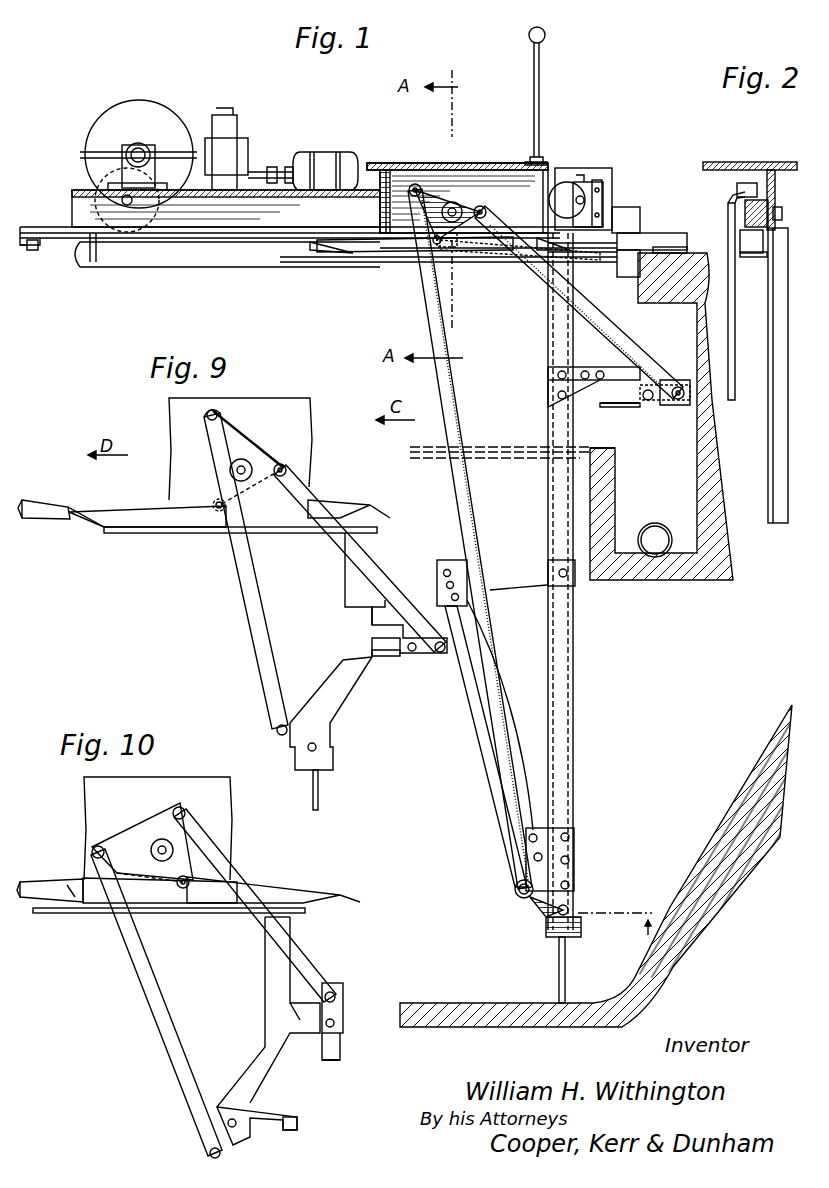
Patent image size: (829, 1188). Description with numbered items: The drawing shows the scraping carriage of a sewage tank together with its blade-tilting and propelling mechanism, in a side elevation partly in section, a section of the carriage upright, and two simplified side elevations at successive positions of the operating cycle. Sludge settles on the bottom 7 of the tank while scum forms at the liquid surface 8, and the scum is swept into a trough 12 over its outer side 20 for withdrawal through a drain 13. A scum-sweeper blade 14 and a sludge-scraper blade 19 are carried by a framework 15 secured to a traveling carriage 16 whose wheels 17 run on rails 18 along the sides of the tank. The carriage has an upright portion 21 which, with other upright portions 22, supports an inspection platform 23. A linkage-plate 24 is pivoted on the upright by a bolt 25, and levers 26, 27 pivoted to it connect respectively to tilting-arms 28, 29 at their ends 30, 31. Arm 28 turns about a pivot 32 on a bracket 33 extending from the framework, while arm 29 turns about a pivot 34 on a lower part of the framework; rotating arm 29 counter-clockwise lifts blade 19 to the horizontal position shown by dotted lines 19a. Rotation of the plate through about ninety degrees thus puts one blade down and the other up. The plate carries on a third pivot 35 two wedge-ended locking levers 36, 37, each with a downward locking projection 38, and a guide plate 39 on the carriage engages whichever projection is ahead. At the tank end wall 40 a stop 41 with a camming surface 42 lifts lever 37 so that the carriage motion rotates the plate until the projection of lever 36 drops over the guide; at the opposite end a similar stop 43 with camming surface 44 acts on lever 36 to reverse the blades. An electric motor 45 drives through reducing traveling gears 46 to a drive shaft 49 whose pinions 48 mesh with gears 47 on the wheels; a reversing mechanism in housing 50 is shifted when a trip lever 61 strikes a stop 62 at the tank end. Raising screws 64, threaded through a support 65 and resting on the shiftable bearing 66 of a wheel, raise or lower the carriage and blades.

In FIG. 1, the bottom 7 is at (455, 1003).
In FIG. 1, the surface 8 is at (475, 446).
In FIG. 1, the trough 12 is at (641, 487).
In FIG. 1, the drain 13 is at (658, 523).
In FIG. 1, the blade 14 is at (640, 408).
In FIG. 9, the blade 14 is at (378, 658).
In FIG. 10, the blade 14 is at (342, 1053).
In FIG. 1, the framework 15 is at (548, 350).
In FIG. 2, the framework 15 is at (770, 367).
In FIG. 9, the framework 15 is at (336, 705).
In FIG. 10, the framework 15 is at (268, 1068).
In FIG. 1, the carriage 16 is at (226, 208).
In FIG. 1, the wheels 17 is at (595, 175).
In FIG. 1, the rails 18 is at (30, 252).
In FIG. 1, the blade 19 is at (565, 975).
In FIG. 9, the blade 19 is at (319, 793).
In FIG. 10, the blade 19 is at (298, 1123).
In FIG. 1, the dotted lines 19a is at (620, 910).
In FIG. 1, the outer side 20 is at (600, 448).
In FIG. 1, the upright portion 21 is at (410, 178).
In FIG. 2, the upright portion 21 is at (772, 165).
In FIG. 1, the upright portions 22 is at (395, 178).
In FIG. 1, the inspection platform 23 is at (432, 166).
In FIG. 2, the inspection platform 23 is at (715, 160).
In FIG. 1, the linkage-plate 24 is at (440, 195).
In FIG. 2, the linkage-plate 24 is at (740, 183).
In FIG. 9, the linkage-plate 24 is at (228, 428).
In FIG. 10, the linkage-plate 24 is at (140, 822).
In FIG. 1, the bolt 25 is at (462, 212).
In FIG. 9, the bolt 25 is at (254, 468).
In FIG. 10, the bolt 25 is at (175, 848).
In FIG. 1, the lever 26 is at (530, 280).
In FIG. 9, the lever 26 is at (330, 545).
In FIG. 10, the lever 26 is at (300, 950).
In FIG. 1, the lever 27 is at (432, 290).
In FIG. 2, the lever 27 is at (742, 325).
In FIG. 9, the lever 27 is at (240, 605).
In FIG. 10, the lever 27 is at (165, 1060).
In FIG. 1, the tilting-arm 28 is at (680, 400).
In FIG. 1, the tilting-arm 29 is at (546, 925).
In FIG. 1, the end 30 is at (685, 400).
In FIG. 9, the end 30 is at (440, 654).
In FIG. 10, the end 30 is at (337, 997).
In FIG. 1, the end 31 is at (515, 890).
In FIG. 9, the end 31 is at (276, 732).
In FIG. 10, the end 31 is at (208, 1153).
In FIG. 1, the pivot 32 is at (648, 390).
In FIG. 9, the pivot 32 is at (412, 652).
In FIG. 10, the pivot 32 is at (336, 1023).
In FIG. 1, the bracket 33 is at (600, 367).
In FIG. 9, the bracket 33 is at (378, 610).
In FIG. 10, the bracket 33 is at (320, 990).
In FIG. 1, the pivot 34 is at (570, 905).
In FIG. 9, the pivot 34 is at (317, 747).
In FIG. 10, the pivot 34 is at (240, 1118).
In FIG. 1, the third pivot 35 is at (440, 247).
In FIG. 9, the third pivot 35 is at (215, 512).
In FIG. 10, the third pivot 35 is at (190, 892).
In FIG. 1, the locking lever 36 is at (345, 252).
In FIG. 9, the locking lever 36 is at (120, 512).
In FIG. 10, the locking lever 36 is at (150, 900).
In FIG. 1, the locking lever 37 is at (490, 270).
In FIG. 9, the locking lever 37 is at (345, 502).
In FIG. 10, the locking lever 37 is at (280, 888).
In FIG. 1, the locking projection 38 is at (330, 250).
In FIG. 9, the locking projection 38 is at (80, 530).
In FIG. 10, the locking projection 38 is at (70, 900).
In FIG. 1, the guide plate 39 is at (380, 262).
In FIG. 2, the guide plate 39 is at (745, 258).
In FIG. 9, the guide plate 39 is at (145, 535).
In FIG. 10, the guide plate 39 is at (95, 915).
In FIG. 1, the end wall 40 is at (690, 274).
In FIG. 1, the stop 41 is at (620, 262).
In FIG. 1, the camming surface 42 is at (625, 225).
In FIG. 9, the stop 43 is at (18, 498).
In FIG. 10, the stop 43 is at (25, 880).
In FIG. 9, the camming surface 44 is at (55, 505).
In FIG. 10, the camming surface 44 is at (40, 882).
In FIG. 1, the electric motor 45 is at (318, 152).
In FIG. 1, the reducing traveling gears 46 is at (222, 115).
In FIG. 1, the gears 47 is at (110, 165).
In FIG. 1, the pinions 48 is at (128, 143).
In FIG. 1, the drive shaft 49 is at (140, 148).
In FIG. 1, the housing 50 is at (122, 118).
In FIG. 1, the trip lever 61 is at (100, 262).
In FIG. 1, the stop 62 is at (150, 267).
In FIG. 1, the raising screws 64 is at (577, 185).
In FIG. 1, the support 65 is at (602, 190).
In FIG. 1, the bearing 66 is at (602, 200).